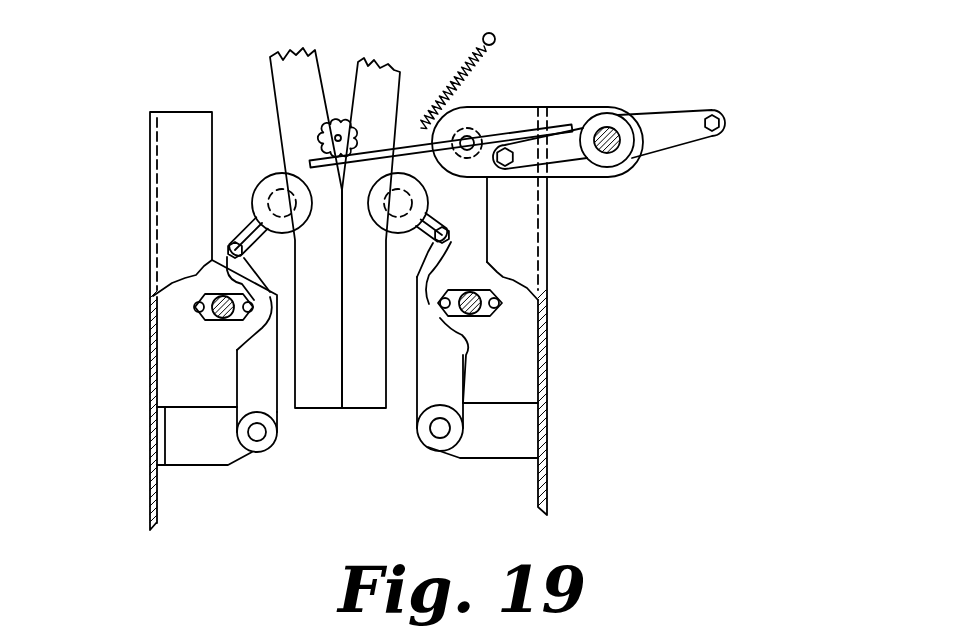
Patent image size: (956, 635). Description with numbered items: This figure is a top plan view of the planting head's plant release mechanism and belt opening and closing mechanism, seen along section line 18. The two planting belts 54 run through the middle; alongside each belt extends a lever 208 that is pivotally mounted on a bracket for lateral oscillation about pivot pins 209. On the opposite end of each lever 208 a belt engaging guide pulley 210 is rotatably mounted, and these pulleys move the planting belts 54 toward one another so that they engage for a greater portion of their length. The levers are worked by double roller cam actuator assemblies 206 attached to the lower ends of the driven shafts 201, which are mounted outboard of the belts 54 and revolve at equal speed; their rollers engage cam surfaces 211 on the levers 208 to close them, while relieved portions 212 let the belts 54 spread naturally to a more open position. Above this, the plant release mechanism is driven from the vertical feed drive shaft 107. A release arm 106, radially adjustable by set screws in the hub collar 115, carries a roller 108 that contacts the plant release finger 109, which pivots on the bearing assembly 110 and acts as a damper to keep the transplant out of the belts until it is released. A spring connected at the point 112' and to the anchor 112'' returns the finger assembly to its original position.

The section line 18- 18 is at (95, 292).
The planting belts 54 is at (368, 78).
The release arm 106 is at (683, 138).
The vertical feed drive shaft 107 is at (617, 153).
The roller 108 is at (722, 117).
The plant release finger 109 is at (563, 116).
The bearing assembly 110 is at (467, 134).
The spring connection point 112' is at (439, 75).
The anchor 112'' is at (536, 33).
The hub collar 115 is at (618, 117).
The driven shafts 201 is at (225, 320).
The double roller cam actuator assemblies 206 is at (212, 290).
The lever 208 is at (238, 382).
The pivot pins 209 is at (260, 433).
The belt engaging guide pulleys 210 is at (270, 182).
The cam surfaces 211 is at (262, 259).
The relieved portions 212 is at (260, 330).